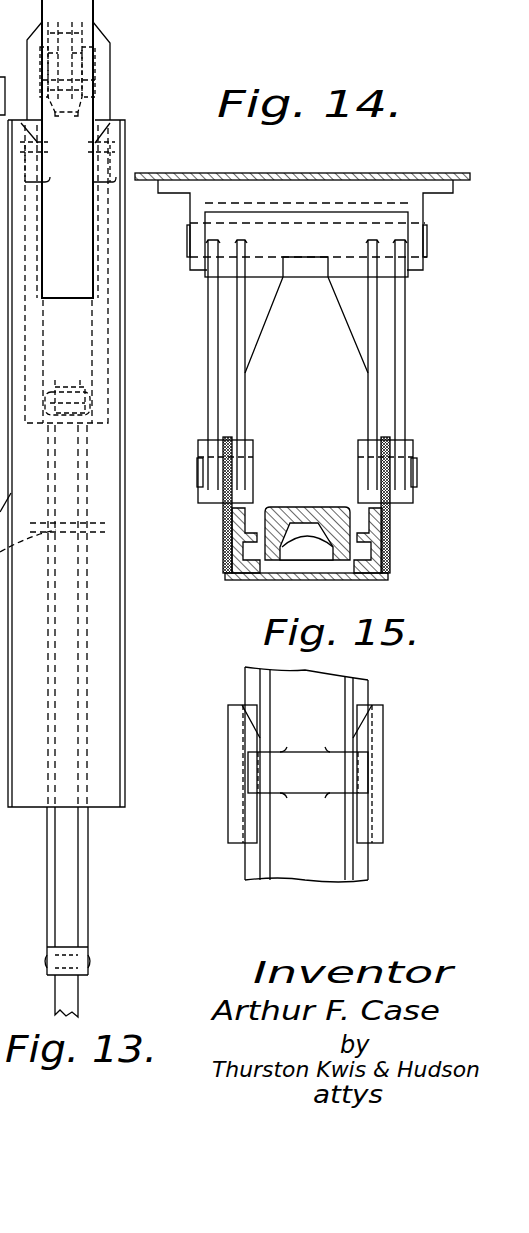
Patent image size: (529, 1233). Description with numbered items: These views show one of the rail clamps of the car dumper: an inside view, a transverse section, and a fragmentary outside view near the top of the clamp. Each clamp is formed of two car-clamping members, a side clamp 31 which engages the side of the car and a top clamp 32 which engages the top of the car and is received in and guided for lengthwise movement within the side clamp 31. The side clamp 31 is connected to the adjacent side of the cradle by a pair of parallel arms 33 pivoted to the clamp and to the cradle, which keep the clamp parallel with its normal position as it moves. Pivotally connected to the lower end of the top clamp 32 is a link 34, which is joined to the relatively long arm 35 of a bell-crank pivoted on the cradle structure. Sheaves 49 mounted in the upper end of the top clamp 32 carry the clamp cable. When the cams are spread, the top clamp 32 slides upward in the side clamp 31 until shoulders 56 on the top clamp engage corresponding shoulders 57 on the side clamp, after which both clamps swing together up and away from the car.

In FIG. 13, the side clamp 31 is at (117, 473).
In FIG. 14, the side clamp 31 is at (403, 535).
In FIG. 15, the side clamp 31 is at (383, 833).
In FIG. 13, the top clamp 32 is at (100, 105).
In FIG. 14, the top clamp 32 is at (325, 507).
In FIG. 15, the top clamp 32 is at (306, 774).
In FIG. 14, the parallel arms 33 is at (208, 403).
In FIG. 13, the link 34 is at (56, 888).
In FIG. 13, the long arm of bell-crank 35 is at (78, 1000).
In FIG. 13, the sheaves 49 is at (78, 37).
In FIG. 13, the shoulders on top clamp 56 is at (98, 182).
In FIG. 15, the shoulders on top clamp 56 is at (360, 777).
In FIG. 13, the shoulders on side clamp 57 is at (100, 147).
In FIG. 15, the shoulders on side clamp 57 is at (360, 740).